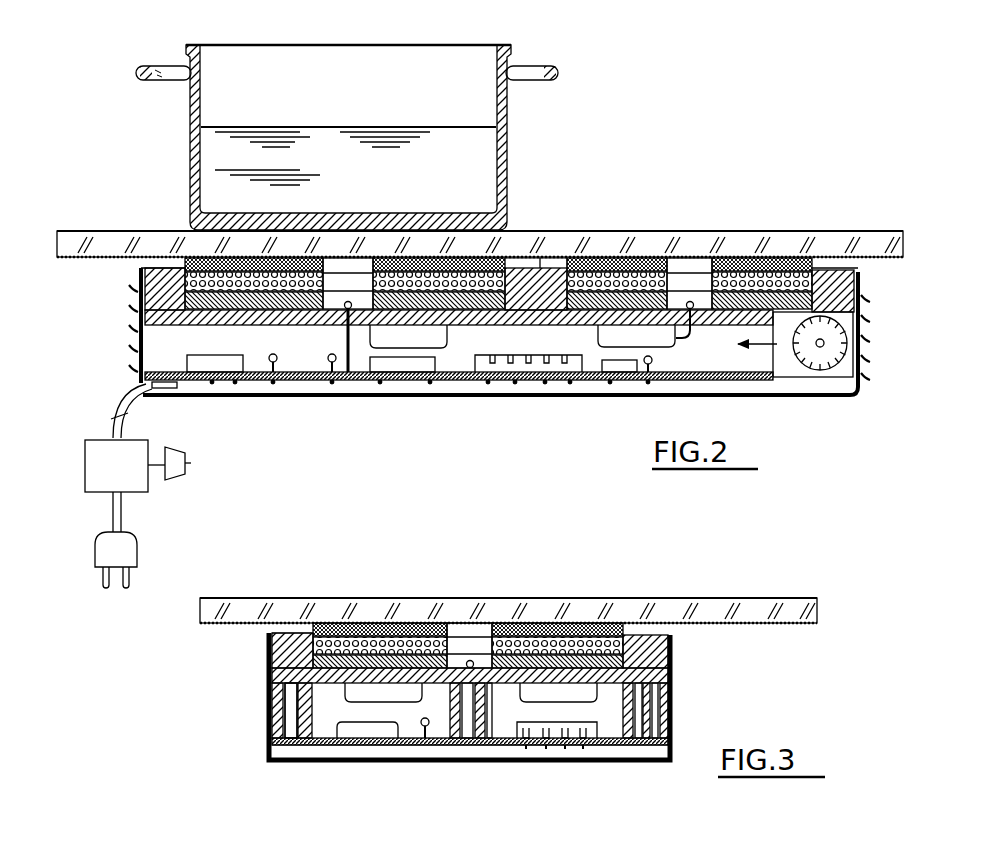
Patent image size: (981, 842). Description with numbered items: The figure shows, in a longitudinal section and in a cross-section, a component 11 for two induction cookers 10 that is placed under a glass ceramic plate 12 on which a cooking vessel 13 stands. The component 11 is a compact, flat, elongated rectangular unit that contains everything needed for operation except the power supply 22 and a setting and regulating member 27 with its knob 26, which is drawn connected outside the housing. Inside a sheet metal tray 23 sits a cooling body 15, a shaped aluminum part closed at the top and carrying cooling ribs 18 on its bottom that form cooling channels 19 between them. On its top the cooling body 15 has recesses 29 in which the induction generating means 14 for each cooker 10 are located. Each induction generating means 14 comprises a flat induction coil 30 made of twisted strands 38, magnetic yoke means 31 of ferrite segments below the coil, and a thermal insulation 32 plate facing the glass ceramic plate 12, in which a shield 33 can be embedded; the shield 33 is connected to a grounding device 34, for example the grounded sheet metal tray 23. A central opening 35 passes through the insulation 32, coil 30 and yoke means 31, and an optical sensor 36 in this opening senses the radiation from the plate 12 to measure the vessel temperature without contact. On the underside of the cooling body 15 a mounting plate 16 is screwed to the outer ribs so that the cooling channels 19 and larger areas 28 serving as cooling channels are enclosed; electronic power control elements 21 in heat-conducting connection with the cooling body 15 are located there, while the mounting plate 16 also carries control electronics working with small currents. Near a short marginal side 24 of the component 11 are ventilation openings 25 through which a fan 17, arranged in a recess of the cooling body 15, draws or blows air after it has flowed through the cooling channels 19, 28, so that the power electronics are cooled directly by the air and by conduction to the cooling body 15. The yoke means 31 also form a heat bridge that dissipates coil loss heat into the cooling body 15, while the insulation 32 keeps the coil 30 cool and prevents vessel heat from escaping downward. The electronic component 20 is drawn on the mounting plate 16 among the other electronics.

In FIG. 2, the induction cooker 10 is at (496, 244).
In FIG. 3, the induction cooker 10 is at (458, 590).
In FIG. 2, the component 11 is at (733, 145).
In FIG. 3, the component 11 is at (738, 687).
In FIG. 2, the plate 12 is at (722, 231).
In FIG. 3, the plate 12 is at (660, 603).
In FIG. 2, the cooking vessel 13 is at (503, 135).
In FIG. 2, the induction generating means 14 is at (180, 284).
In FIG. 3, the induction generating means 14 is at (675, 644).
In FIG. 2, the cooling body 15 is at (503, 325).
In FIG. 3, the cooling body 15 is at (674, 680).
In FIG. 2, the mounting plate 16 is at (385, 381).
In FIG. 3, the mounting plate 16 is at (440, 746).
In FIG. 2, the fan 17 is at (823, 380).
In FIG. 3, the cooling ribs 18 is at (267, 700).
In FIG. 3, the cooling channels 19 is at (267, 733).
In FIG. 2, the electronic component 20 is at (577, 381).
In FIG. 3, the electronic component 20 is at (540, 746).
In FIG. 2, the electronic power control elements 21 is at (672, 343).
In FIG. 3, the electronic power control elements 21 is at (368, 700).
In FIG. 2, the power supply 22 is at (138, 548).
In FIG. 2, the sheet metal tray 23 is at (222, 398).
In FIG. 3, the sheet metal tray 23 is at (598, 762).
In FIG. 2, the short marginal side 24 is at (861, 283).
In FIG. 2, the ventilation openings 25 is at (158, 340).
In FIG. 2, the knob 26 is at (189, 468).
In FIG. 2, the setting and regulating member 27 is at (88, 466).
In FIG. 3, the larger areas serving as cooling channels 28 is at (409, 728).
In FIG. 2, the recesses 29 is at (517, 256).
In FIG. 3, the recesses 29 is at (303, 636).
In FIG. 2, the induction coil 30 is at (200, 258).
In FIG. 3, the induction coil 30 is at (337, 648).
In FIG. 2, the magnetic yoke means 31 is at (272, 308).
In FIG. 3, the magnetic yoke means 31 is at (267, 669).
In FIG. 2, the thermal insulation 32 is at (413, 258).
In FIG. 3, the thermal insulation 32 is at (390, 632).
In FIG. 2, the shield 33 is at (651, 256).
In FIG. 3, the shield 33 is at (568, 622).
In FIG. 2, the grounding device 34 is at (547, 256).
In FIG. 2, the central opening 35 is at (342, 280).
In FIG. 2, the optical sensor 36 is at (693, 270).
In FIG. 3, the optical sensor 36 is at (477, 660).
In FIG. 2, the strands 38 is at (763, 256).
In FIG. 3, the strands 38 is at (513, 630).